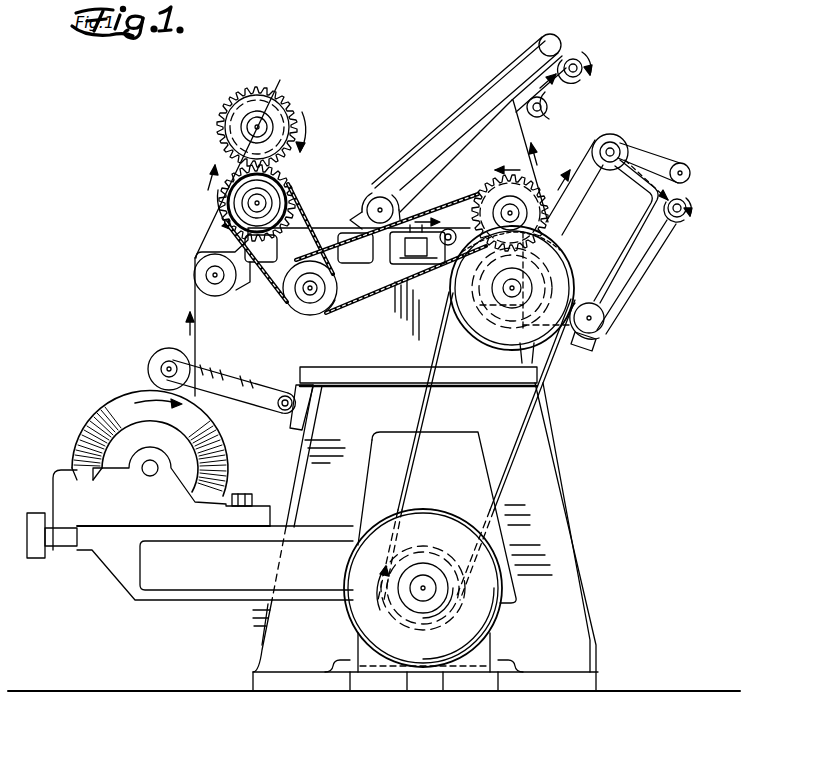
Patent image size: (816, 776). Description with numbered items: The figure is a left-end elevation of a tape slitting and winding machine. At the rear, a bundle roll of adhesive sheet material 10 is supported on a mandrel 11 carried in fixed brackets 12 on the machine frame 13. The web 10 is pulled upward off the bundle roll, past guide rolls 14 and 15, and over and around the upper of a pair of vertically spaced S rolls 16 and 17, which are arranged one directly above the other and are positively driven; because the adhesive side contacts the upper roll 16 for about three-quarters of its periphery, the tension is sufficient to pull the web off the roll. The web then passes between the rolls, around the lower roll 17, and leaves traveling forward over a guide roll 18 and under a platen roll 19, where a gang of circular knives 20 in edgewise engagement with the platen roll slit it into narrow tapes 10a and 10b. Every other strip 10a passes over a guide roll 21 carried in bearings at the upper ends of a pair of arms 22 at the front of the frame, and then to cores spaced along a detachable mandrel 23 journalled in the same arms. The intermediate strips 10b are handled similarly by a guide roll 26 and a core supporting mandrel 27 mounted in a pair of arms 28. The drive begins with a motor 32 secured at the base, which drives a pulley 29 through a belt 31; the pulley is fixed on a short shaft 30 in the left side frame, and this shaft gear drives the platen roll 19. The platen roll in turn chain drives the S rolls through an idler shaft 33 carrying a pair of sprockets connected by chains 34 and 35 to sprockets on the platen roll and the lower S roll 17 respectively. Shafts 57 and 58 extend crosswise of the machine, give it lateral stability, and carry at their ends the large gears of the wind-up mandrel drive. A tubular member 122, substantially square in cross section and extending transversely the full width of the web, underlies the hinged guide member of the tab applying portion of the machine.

The adhesive sheet material web 10 is at (345, 223).
The tape strips 10a is at (566, 190).
The intermediate tape strips 10b is at (530, 128).
The mandrel 11 is at (146, 473).
The brackets 12 is at (117, 566).
The machine frame 13 is at (262, 634).
The guide roll 14 is at (150, 362).
The guide roll 15 is at (196, 273).
The upper S roll 16 is at (268, 100).
The lower S roll 17 is at (232, 208).
The guide roll 18 is at (455, 224).
The platen roll 19 is at (476, 202).
The circular knives 20 is at (568, 268).
The guide roll 21 is at (618, 146).
The arms 22 is at (640, 259).
The core supporting mandrel 23 is at (683, 218).
The guide roll 26 is at (554, 107).
The core supporting mandrel 27 is at (583, 78).
The arms 28 is at (477, 108).
The pulley 29 is at (466, 330).
The pulley shaft 30 is at (510, 296).
The belt 31 is at (428, 406).
The motor 32 is at (437, 675).
The idler shaft 33 is at (310, 292).
The chain 34 is at (366, 306).
The chain 35 is at (268, 285).
The shaft 57 is at (600, 320).
The shaft 58 is at (380, 198).
The tubular member 122 is at (406, 258).